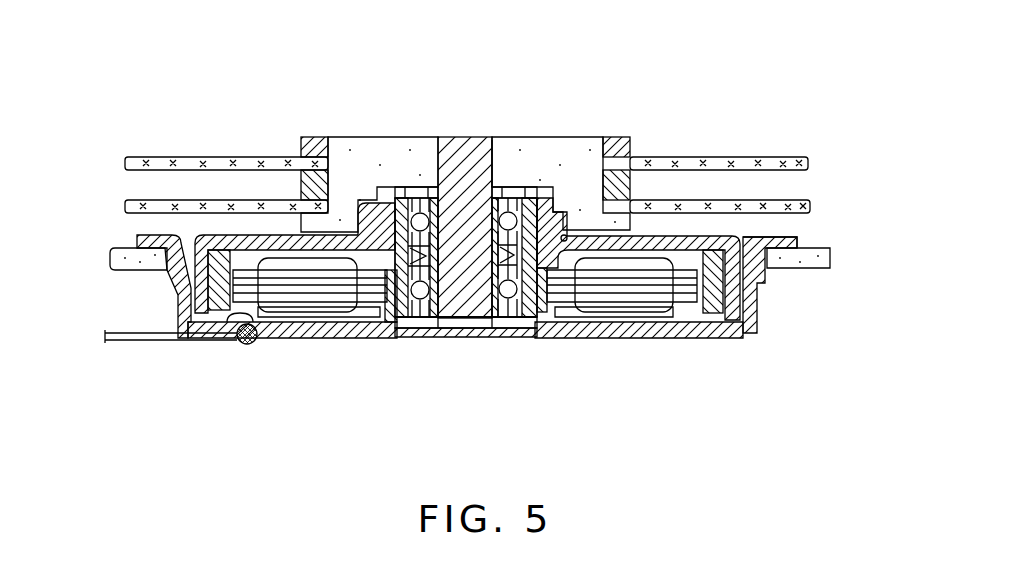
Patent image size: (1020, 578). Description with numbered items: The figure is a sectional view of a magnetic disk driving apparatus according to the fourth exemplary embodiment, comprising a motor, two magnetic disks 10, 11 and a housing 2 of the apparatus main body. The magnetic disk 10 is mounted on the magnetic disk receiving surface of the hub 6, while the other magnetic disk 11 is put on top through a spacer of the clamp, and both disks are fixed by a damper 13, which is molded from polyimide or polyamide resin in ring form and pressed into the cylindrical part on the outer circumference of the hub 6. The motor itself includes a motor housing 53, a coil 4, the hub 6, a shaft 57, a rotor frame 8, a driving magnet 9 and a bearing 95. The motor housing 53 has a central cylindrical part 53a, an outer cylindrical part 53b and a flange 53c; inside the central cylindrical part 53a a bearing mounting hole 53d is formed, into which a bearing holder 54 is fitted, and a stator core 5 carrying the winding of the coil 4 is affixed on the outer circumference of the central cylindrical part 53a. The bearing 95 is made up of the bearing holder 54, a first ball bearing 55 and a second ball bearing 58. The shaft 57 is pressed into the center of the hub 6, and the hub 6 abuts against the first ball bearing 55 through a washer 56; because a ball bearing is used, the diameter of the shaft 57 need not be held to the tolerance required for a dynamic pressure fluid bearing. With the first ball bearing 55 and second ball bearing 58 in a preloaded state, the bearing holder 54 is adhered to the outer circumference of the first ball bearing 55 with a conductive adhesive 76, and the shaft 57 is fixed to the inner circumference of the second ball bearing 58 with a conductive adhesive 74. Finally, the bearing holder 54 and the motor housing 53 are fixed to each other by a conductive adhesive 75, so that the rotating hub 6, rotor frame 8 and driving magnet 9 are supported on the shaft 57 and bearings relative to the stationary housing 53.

The housing 2 is at (827, 257).
The coil 4 is at (633, 312).
The stator core 5 is at (712, 338).
The hub 6 is at (557, 140).
The rotor frame 8 is at (708, 238).
The driving magnet 9 is at (215, 297).
The magnetic disk 10 is at (137, 198).
The magnetic disk 11 is at (143, 157).
The damper 13 is at (312, 137).
The motor housing 53 is at (688, 338).
The central cylindrical part 53a is at (548, 337).
The outer cylindrical part 53b is at (757, 302).
The flange 53c is at (793, 237).
The bearing mounting hole 53d is at (418, 330).
The bearing holder 54 is at (523, 330).
The first ball bearing 55 is at (513, 200).
The washer 56 is at (497, 150).
The shaft 57 is at (458, 148).
The second ball bearing 58 is at (495, 330).
The conductive adhesive 74 is at (467, 328).
The conductive adhesive 75 is at (413, 302).
The conductive adhesive 76 is at (413, 197).
The bearing 95 is at (550, 420).